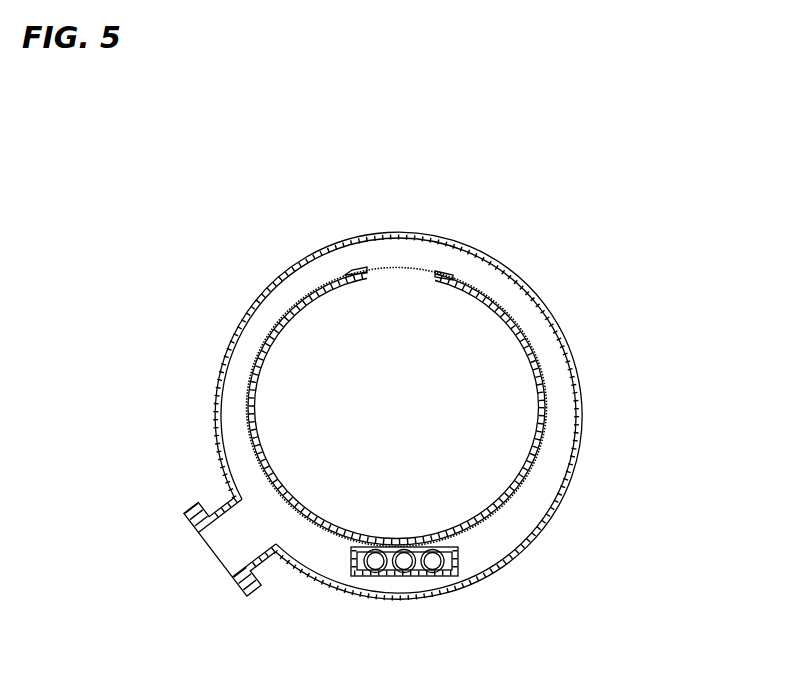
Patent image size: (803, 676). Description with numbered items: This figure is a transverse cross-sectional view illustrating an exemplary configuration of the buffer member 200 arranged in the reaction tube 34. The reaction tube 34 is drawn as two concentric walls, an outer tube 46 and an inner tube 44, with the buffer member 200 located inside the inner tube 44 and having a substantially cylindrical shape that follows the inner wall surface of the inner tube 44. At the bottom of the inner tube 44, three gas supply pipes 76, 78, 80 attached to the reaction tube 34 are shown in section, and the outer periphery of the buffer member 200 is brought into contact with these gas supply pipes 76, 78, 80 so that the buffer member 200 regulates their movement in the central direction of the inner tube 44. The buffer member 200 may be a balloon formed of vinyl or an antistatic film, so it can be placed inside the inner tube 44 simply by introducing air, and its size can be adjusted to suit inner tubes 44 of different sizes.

The reaction tube 34 is at (383, 376).
The inner tube 44 is at (457, 272).
The outer tube 46 is at (500, 260).
The buffer member 200 is at (402, 266).
The gas supply pipe 76 is at (432, 577).
The gas supply pipe 78 is at (403, 577).
The gas supply pipe 80 is at (373, 577).